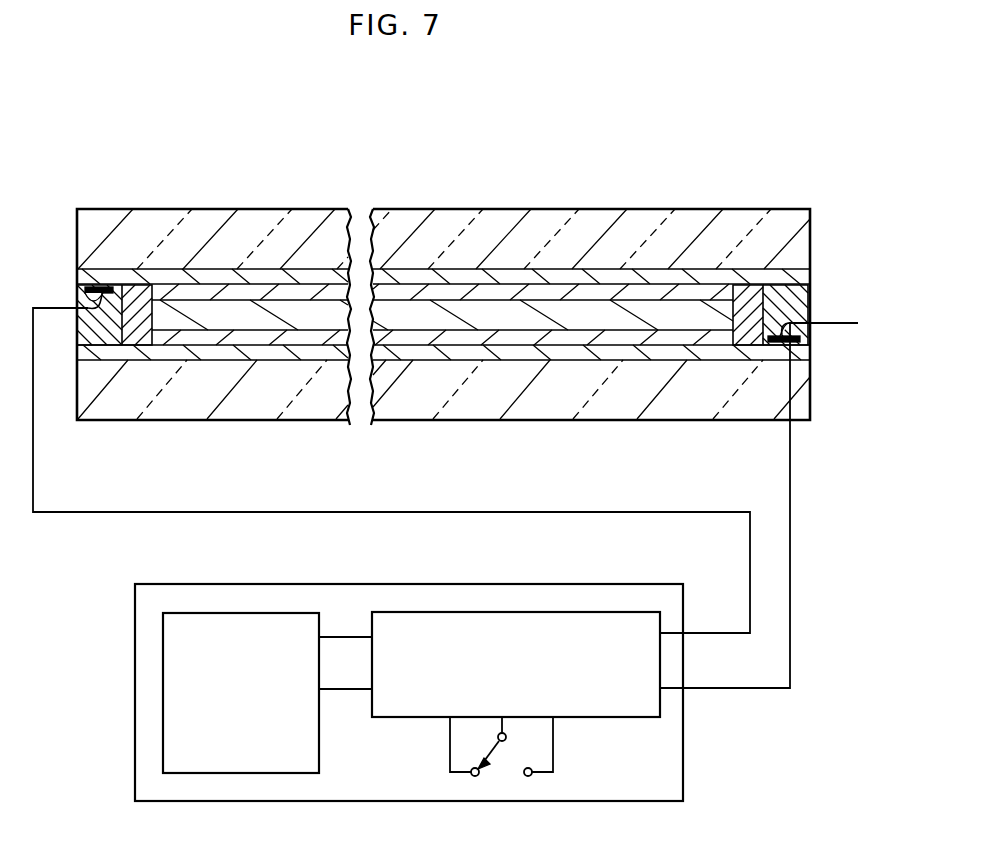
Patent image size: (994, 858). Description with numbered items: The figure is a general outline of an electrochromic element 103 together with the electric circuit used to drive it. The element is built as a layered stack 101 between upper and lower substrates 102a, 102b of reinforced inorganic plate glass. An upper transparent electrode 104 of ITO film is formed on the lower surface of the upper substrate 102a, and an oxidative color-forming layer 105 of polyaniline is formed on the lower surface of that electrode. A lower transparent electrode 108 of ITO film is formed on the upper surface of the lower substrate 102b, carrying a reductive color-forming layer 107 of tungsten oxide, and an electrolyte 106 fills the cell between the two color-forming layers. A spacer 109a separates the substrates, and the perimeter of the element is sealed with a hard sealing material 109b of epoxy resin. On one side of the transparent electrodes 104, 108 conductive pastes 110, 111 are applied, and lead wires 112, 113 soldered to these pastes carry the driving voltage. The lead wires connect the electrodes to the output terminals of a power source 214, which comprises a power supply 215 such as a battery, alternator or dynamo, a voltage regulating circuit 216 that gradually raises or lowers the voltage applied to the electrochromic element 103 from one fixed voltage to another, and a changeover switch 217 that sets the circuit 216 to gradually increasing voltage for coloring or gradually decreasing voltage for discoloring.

The electrochromic layer stack 101 is at (520, 166).
The upper substrate 102a is at (278, 231).
The lower substrate 102b is at (698, 405).
The electrochromic element 103 is at (642, 197).
The upper transparent electrode 104 is at (438, 271).
The oxidative color-forming layer 105 is at (498, 292).
The electrolyte 106 is at (550, 308).
The reductive color-forming layer 107 is at (530, 347).
The lower transparent electrode 108 is at (637, 362).
The spacer 109a is at (738, 300).
The hard sealing material 109b is at (809, 294).
The conductive paste 110 is at (78, 290).
The conductive paste 111 is at (806, 341).
The lead wire 112 is at (33, 432).
The lead wire 113 is at (858, 436).
The power source 214 is at (133, 639).
The power supply 215 is at (233, 620).
The voltage regulating circuit 216 is at (499, 620).
The changeover switch 217 is at (495, 744).